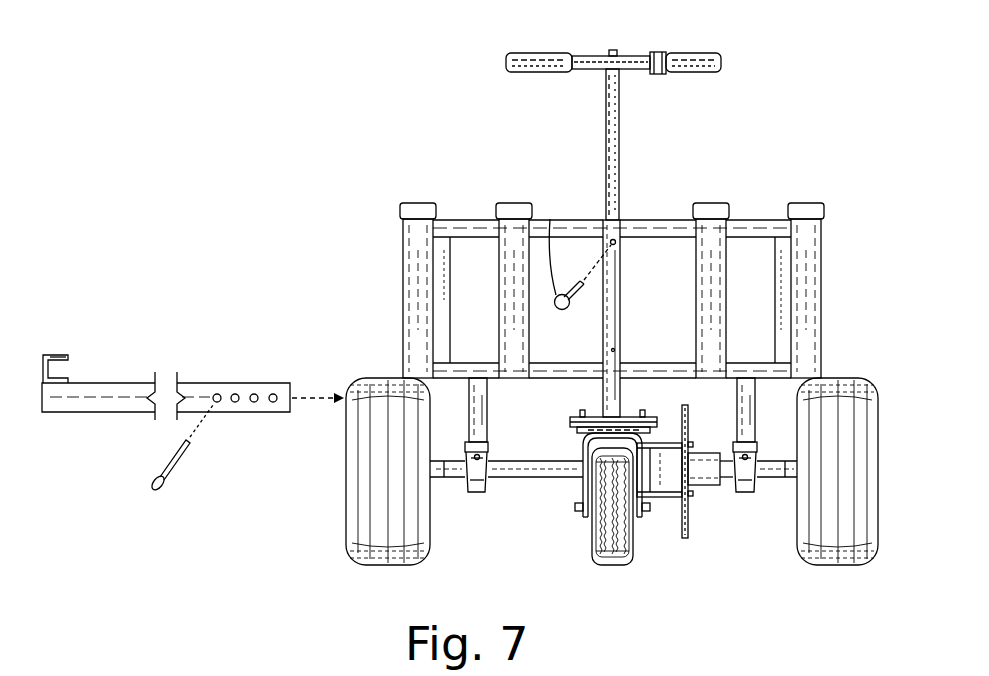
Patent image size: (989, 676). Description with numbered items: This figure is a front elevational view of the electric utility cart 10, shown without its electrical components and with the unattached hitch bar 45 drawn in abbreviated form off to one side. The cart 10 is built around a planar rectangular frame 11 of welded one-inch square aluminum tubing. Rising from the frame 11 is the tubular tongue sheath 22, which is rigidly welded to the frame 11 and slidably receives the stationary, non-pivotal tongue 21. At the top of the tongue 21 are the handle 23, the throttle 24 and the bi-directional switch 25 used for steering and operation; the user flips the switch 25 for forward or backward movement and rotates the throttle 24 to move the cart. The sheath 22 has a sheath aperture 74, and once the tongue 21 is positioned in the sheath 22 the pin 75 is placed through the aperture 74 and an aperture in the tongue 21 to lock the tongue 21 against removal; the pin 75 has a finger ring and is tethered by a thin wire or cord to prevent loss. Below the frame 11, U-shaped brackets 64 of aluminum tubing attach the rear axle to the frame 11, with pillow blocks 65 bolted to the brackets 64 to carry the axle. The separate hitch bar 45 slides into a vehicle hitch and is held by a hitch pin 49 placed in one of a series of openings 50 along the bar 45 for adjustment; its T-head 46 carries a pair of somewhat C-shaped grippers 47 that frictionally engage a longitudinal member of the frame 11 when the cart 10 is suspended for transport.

The utility cart 10 is at (411, 136).
The planar rectangular frame 11 is at (474, 357).
The tongue 21 is at (620, 150).
The tongue sheath 22 is at (621, 300).
The handle 23 is at (545, 54).
The throttle 24 is at (700, 56).
The bi-directional switch 25 is at (614, 49).
The hitch bar 45 is at (219, 381).
The T-head 46 is at (54, 355).
The grippers 47 is at (62, 360).
The hitch pin 49 is at (166, 487).
The openings 50 is at (273, 404).
The U-shaped brackets 64 is at (470, 403).
The pillow blocks 65 is at (474, 493).
The sheath aperture 74 is at (617, 239).
The pin 75 is at (576, 301).